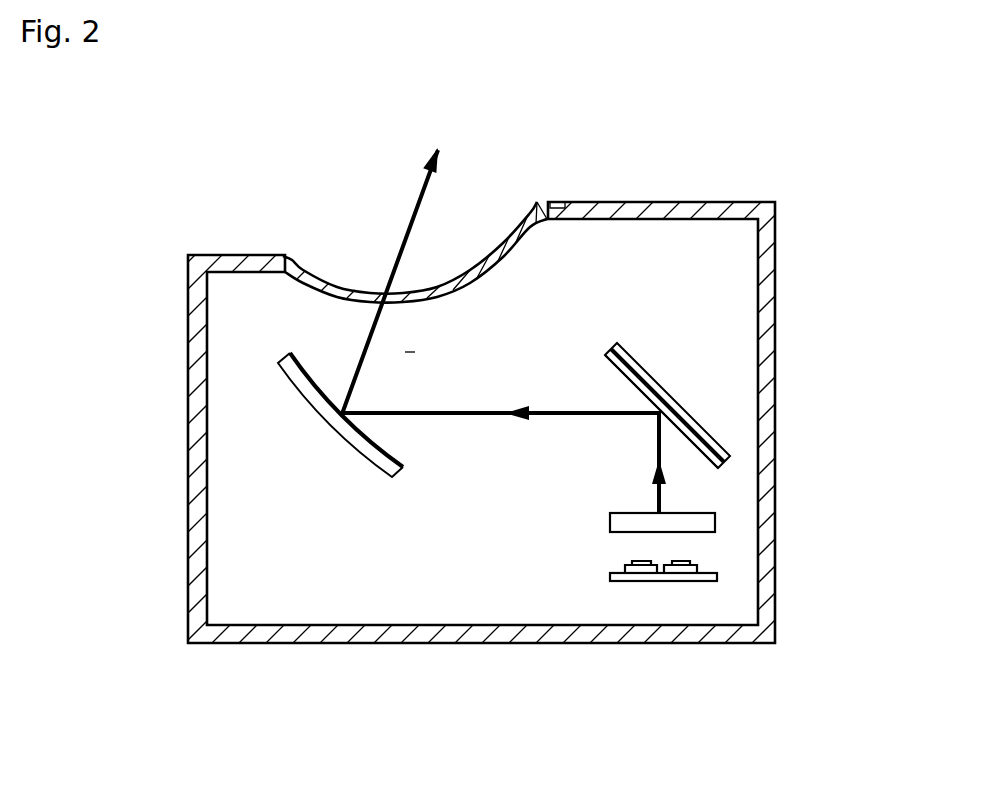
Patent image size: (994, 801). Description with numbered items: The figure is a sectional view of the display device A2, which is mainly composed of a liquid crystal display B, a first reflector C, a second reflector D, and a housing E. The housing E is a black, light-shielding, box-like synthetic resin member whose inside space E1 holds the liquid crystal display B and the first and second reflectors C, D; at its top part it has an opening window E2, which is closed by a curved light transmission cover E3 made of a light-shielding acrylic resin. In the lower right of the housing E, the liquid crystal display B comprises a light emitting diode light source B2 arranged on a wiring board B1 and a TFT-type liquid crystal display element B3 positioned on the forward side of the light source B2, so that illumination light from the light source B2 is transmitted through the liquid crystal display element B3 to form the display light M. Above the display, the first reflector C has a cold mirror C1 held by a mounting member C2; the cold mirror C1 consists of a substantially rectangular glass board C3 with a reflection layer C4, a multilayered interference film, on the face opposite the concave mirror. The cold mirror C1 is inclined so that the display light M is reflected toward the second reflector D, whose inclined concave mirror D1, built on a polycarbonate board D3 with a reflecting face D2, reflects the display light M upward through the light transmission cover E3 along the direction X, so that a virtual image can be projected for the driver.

The display device A2 is at (232, 159).
The housing E is at (463, 653).
The space E1 is at (323, 600).
The opening window E2 is at (568, 202).
The light transmission cover E3 is at (315, 278).
The liquid crystal display B is at (720, 589).
The wiring board B1 is at (666, 577).
The light source B2 is at (698, 566).
The liquid crystal display element B3 is at (705, 522).
The first reflector C is at (687, 388).
The cold mirror C1 is at (697, 407).
The mounting member C2 is at (697, 432).
The glass board C3 is at (628, 378).
The reflection layer C4 is at (678, 440).
The second reflector D is at (313, 449).
The concave mirror D1 is at (368, 458).
The reflector substrate D2 is at (380, 467).
The board D3 is at (397, 458).
The display light M is at (452, 412).
The emission direction X is at (385, 392).